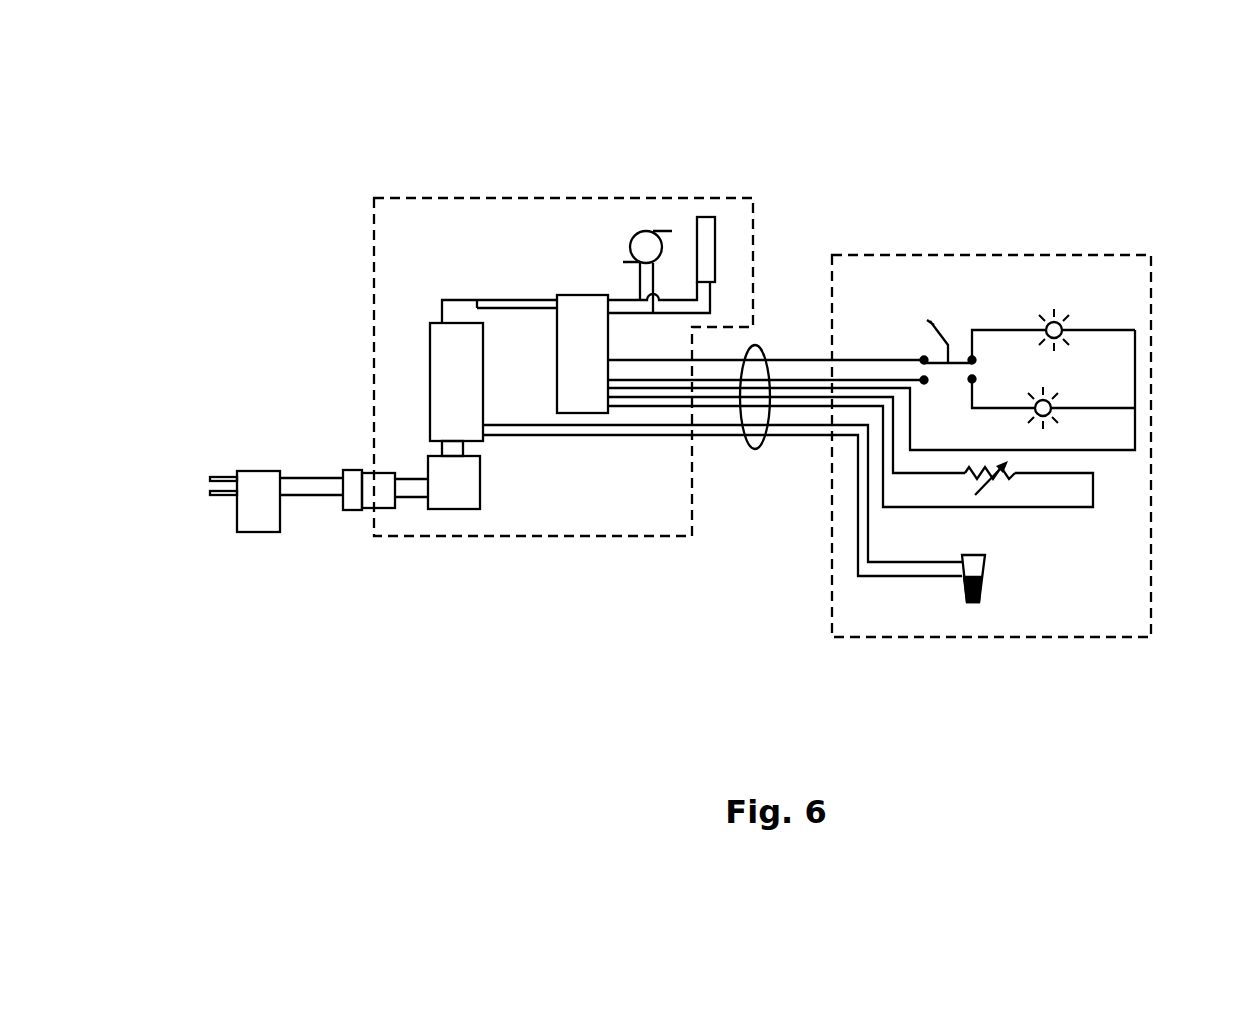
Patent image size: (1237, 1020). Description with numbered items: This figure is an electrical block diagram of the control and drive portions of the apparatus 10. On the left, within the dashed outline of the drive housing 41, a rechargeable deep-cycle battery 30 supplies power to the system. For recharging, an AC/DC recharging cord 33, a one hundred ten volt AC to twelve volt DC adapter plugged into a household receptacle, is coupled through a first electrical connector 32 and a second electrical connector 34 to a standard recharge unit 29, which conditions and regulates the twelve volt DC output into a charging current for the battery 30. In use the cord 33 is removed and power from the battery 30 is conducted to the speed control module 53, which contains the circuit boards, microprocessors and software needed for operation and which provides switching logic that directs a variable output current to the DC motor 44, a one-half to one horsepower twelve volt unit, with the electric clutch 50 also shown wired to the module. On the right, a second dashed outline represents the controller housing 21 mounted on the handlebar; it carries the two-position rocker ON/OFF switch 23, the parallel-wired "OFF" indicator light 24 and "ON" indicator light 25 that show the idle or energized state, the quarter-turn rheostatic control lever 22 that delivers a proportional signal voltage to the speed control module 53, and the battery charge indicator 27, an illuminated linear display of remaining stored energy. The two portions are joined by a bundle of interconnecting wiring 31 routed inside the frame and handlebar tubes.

The apparatus 10 is at (318, 158).
The controller housing 21 is at (910, 255).
The control lever 22 is at (1002, 473).
The ON/OFF switch 23 is at (928, 323).
The "OFF" indicator light 24 is at (1047, 320).
The "ON" indicator light 25 is at (1057, 403).
The battery charge indicator 27 is at (977, 602).
The recharge unit 29 is at (455, 510).
The battery 30 is at (442, 335).
The interconnecting wiring 31 is at (492, 308).
The first electrical connector 32 is at (345, 472).
The AC/DC recharging cord 33 is at (308, 495).
The second electrical connector 34 is at (378, 482).
The drive housing 41 is at (410, 197).
The DC motor 44 is at (640, 230).
The electric clutch 50 is at (712, 230).
The speed control module 53 is at (582, 295).